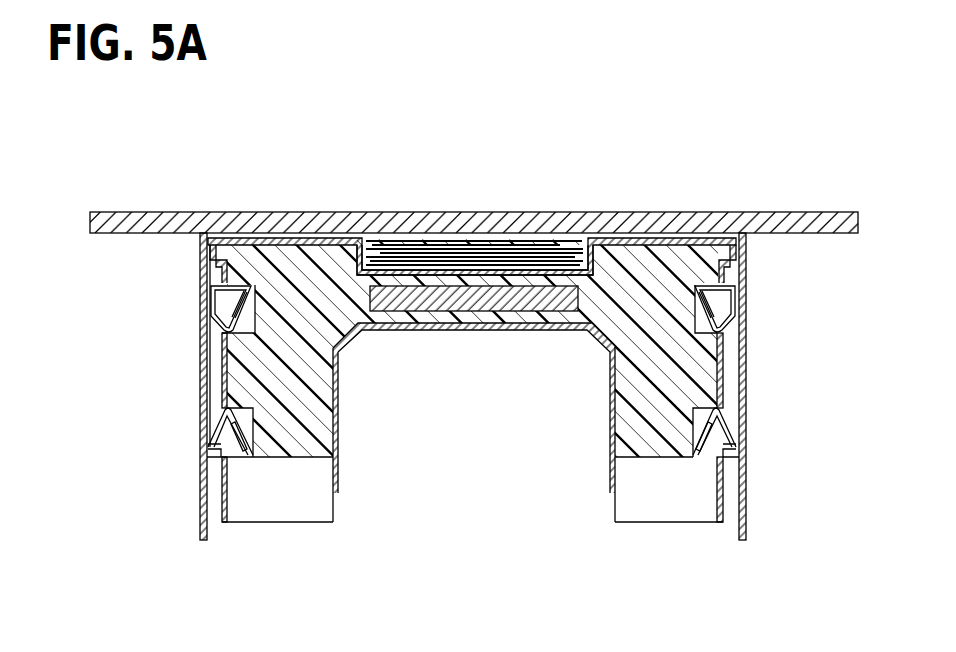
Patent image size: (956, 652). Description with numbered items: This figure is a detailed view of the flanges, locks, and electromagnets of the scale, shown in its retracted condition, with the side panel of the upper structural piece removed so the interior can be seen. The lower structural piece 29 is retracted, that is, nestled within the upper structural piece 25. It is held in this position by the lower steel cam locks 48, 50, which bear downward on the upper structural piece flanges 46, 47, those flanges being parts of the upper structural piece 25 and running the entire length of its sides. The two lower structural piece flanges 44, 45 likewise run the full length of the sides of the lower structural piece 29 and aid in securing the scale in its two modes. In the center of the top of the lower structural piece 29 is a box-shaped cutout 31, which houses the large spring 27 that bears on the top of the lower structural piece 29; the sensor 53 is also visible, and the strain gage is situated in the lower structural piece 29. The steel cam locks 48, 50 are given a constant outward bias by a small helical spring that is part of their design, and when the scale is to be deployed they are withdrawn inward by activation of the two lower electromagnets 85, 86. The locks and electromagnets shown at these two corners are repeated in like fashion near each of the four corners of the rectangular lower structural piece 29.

The upper structural piece 25 is at (200, 505).
The large spring 27 is at (560, 237).
The lower structural piece 29 is at (633, 371).
The box-shaped cutout 31 is at (347, 262).
The lower structural piece flange 44 is at (218, 250).
The lower structural piece flange 45 is at (736, 252).
The upper structural piece flange 46 is at (215, 463).
The upper structural piece flange 47 is at (733, 465).
The lower steel cam lock 48 is at (208, 447).
The lower steel cam lock 50 is at (726, 432).
The sensor 53 is at (696, 240).
The lower electromagnet 85 is at (240, 433).
The lower electromagnet 86 is at (703, 432).